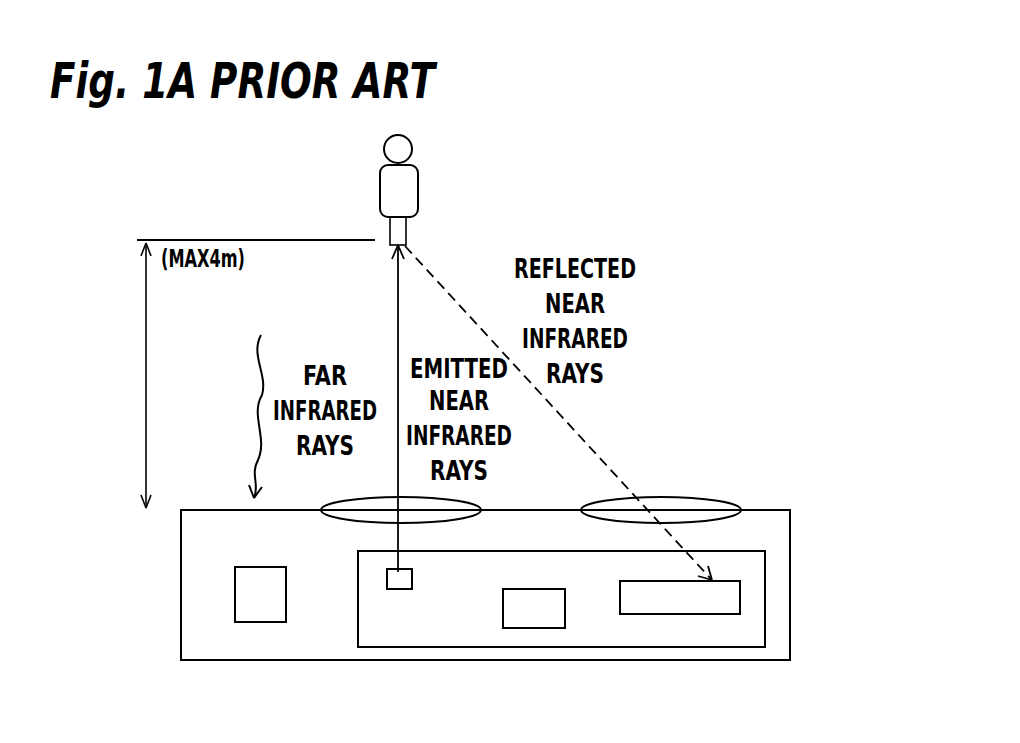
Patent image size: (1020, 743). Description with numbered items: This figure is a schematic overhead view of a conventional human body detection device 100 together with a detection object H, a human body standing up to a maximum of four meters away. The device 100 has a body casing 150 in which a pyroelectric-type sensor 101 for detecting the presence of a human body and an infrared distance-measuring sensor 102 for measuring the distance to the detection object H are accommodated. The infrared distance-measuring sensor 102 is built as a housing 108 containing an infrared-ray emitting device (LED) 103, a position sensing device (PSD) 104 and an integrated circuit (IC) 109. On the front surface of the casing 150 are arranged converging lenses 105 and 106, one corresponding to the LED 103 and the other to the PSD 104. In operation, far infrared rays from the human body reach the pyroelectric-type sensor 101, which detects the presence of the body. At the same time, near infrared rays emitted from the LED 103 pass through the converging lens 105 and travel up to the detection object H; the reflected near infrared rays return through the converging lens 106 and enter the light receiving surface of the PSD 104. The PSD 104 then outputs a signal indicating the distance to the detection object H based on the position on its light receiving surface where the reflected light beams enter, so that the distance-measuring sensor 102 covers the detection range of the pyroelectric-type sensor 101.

The detection object H is at (408, 186).
The human body detection device 100 is at (176, 577).
The body casing 150 is at (181, 627).
The pyroelectric-type sensor 101 is at (250, 622).
The infrared distance-measuring sensor 102 is at (765, 560).
The housing 108 is at (358, 576).
The infrared-ray emitting device (LED) 103 is at (387, 586).
The position sensing device (PSD) 104 is at (742, 597).
The integrated circuit (IC) 109 is at (503, 608).
The converging lens 105 is at (465, 500).
The converging lens 106 is at (690, 495).